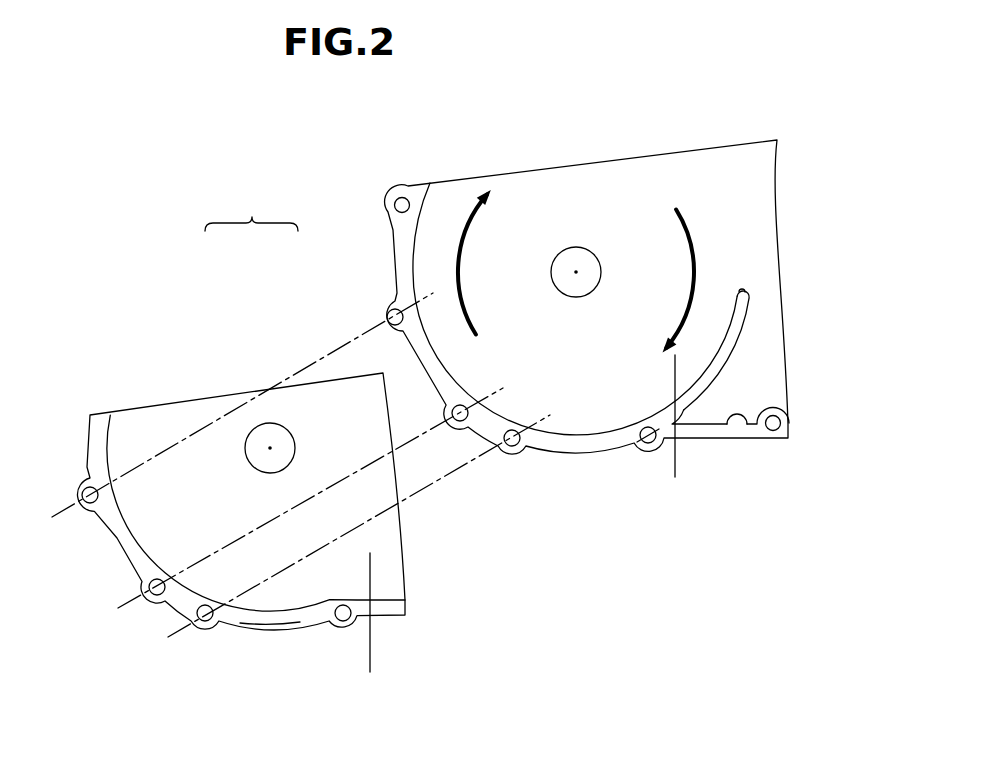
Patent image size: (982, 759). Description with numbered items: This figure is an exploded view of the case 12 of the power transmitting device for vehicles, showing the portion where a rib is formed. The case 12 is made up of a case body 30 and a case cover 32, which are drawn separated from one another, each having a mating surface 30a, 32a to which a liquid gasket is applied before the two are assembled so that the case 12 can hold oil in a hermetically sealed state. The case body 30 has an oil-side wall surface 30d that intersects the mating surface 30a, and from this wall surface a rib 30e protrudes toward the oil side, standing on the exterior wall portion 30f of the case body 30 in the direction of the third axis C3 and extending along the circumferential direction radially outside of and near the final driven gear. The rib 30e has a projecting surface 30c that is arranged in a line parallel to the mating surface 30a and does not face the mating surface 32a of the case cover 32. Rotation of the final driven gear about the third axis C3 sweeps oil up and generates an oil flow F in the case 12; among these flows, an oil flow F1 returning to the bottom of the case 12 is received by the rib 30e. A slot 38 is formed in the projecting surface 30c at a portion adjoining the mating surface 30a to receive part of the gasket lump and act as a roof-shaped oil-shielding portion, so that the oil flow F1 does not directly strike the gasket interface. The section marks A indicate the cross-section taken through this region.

The case 12 is at (251, 212).
The case body 30 is at (352, 248).
The case cover 32 is at (244, 349).
The mating surface 30a is at (707, 436).
The projecting surface 30c is at (742, 322).
The oil-side wall surface 30d is at (747, 418).
The rib 30e is at (760, 296).
The exterior wall portion 30f is at (747, 375).
The mating surface 32a is at (260, 623).
The slot 38 is at (637, 440).
The third axis C3 is at (576, 272).
The oil flow F is at (477, 243).
The oil flow F1 is at (680, 228).
The section line A is at (659, 371).